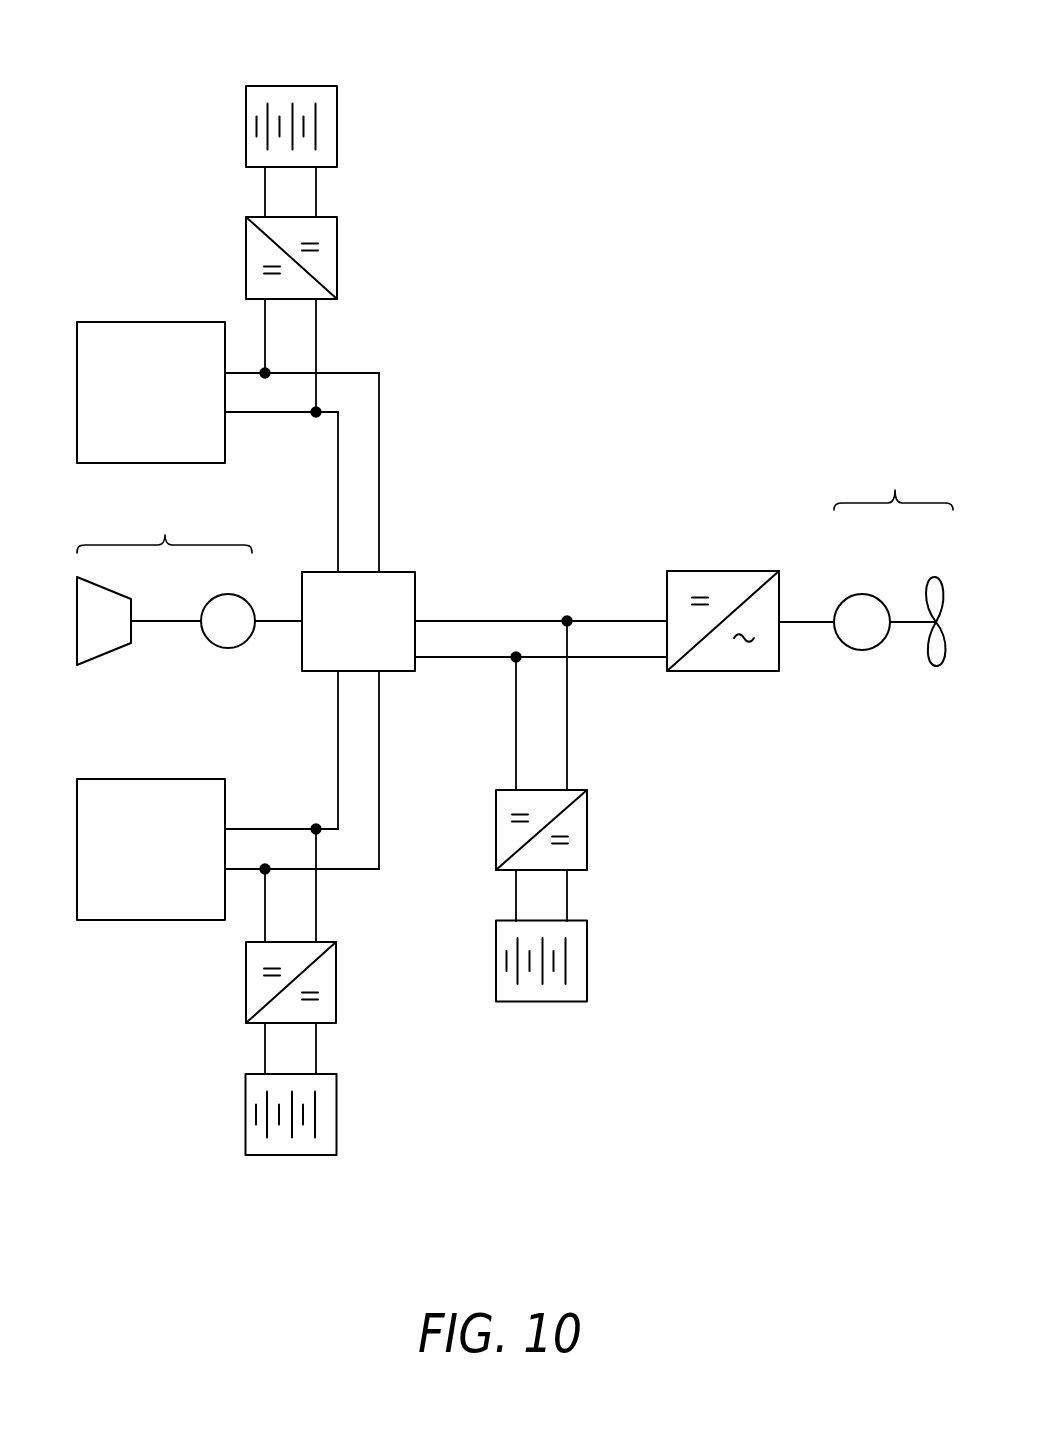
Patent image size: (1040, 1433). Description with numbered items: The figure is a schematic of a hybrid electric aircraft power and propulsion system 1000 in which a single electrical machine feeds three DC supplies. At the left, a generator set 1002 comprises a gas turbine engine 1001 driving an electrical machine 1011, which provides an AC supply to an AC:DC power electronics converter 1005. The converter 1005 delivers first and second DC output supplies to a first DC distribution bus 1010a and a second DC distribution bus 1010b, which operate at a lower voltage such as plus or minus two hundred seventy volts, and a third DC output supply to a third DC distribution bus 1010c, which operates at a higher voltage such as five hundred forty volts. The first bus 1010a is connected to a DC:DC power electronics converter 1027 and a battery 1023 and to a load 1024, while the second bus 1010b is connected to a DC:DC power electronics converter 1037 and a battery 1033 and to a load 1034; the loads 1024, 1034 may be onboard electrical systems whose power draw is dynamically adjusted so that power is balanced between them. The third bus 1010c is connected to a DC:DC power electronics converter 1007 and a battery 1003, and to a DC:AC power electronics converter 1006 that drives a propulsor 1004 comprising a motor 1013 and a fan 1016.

The aircraft power and propulsion system 1000 is at (120, 98).
The gas turbine engine 1001 is at (107, 652).
The generator set 1002 is at (164, 526).
The battery 1003 is at (587, 960).
The propulsor 1004 is at (893, 488).
The AC:DC power electronics converter 1005 is at (317, 571).
The DC:AC power electronics converter 1006 is at (722, 570).
The DC:DC power electronics converter 1007 is at (587, 828).
The first DC distribution bus 1010a is at (380, 715).
The second DC distribution bus 1010b is at (379, 391).
The third DC distribution bus 1010c is at (473, 620).
The electrical machine 1011 is at (228, 648).
The motor 1013 is at (862, 593).
The fan 1016 is at (935, 577).
The battery 1023 is at (337, 1113).
The load 1024 is at (150, 921).
The DC:DC power electronics converter 1027 is at (337, 982).
The battery 1033 is at (337, 125).
The load 1034 is at (151, 321).
The DC:DC power electronics converter 1037 is at (337, 258).